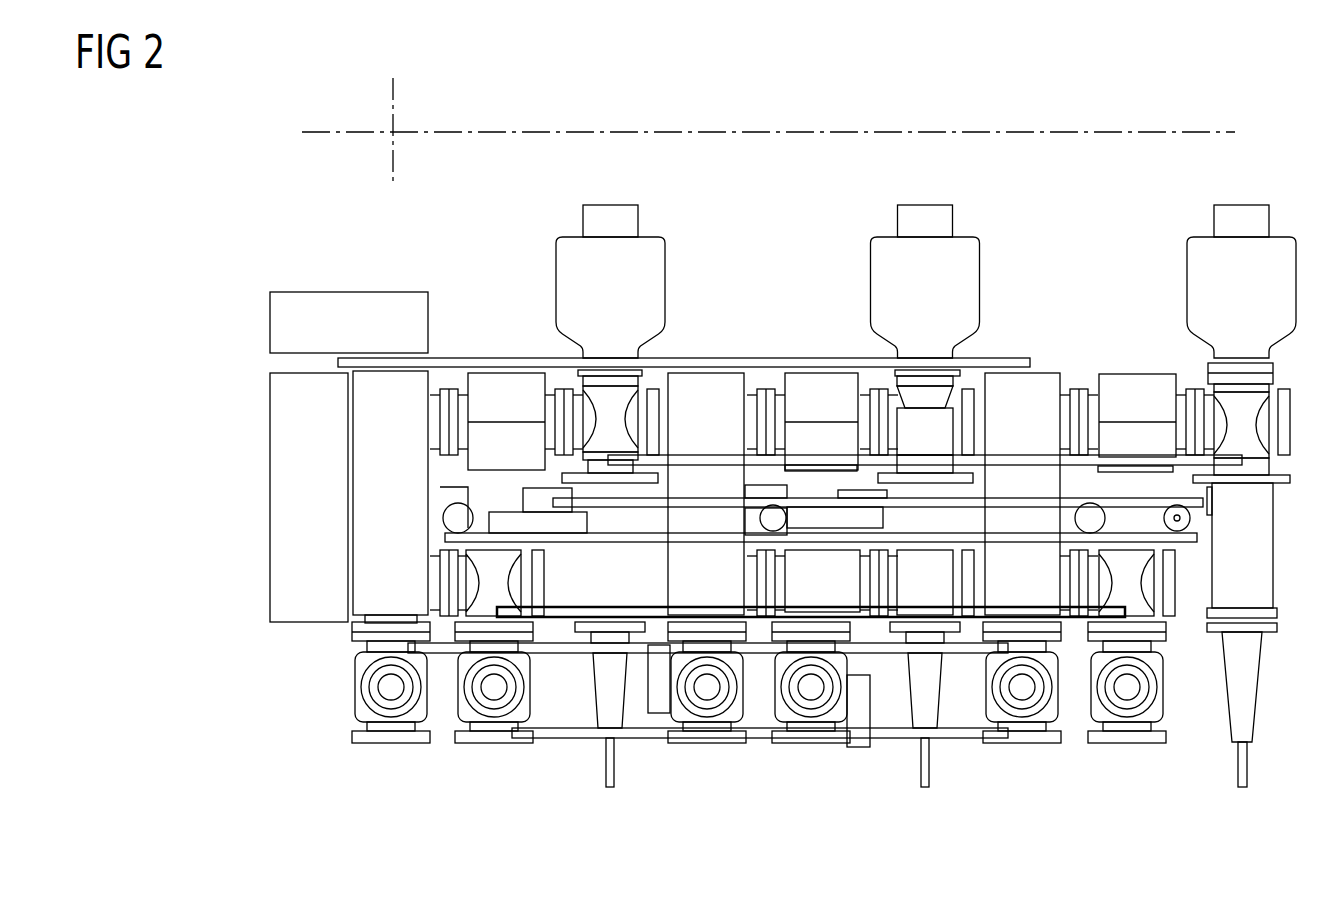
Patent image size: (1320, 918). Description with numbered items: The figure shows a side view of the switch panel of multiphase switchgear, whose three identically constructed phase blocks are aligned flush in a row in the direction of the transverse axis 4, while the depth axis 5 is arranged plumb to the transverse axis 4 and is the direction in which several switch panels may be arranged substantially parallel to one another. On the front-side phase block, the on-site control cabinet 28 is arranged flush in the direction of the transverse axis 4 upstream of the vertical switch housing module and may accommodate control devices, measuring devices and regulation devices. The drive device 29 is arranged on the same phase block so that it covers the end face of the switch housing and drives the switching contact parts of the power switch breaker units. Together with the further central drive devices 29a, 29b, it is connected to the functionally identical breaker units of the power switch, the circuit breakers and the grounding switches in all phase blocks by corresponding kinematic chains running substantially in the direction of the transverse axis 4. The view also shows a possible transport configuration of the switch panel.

The transverse axis 4 is at (1020, 145).
The depth axis 5 is at (393, 133).
The on-site control cabinet 28 is at (268, 487).
The drive device 29 is at (312, 290).
The central drive device 29a is at (507, 518).
The central drive device 29b is at (945, 431).